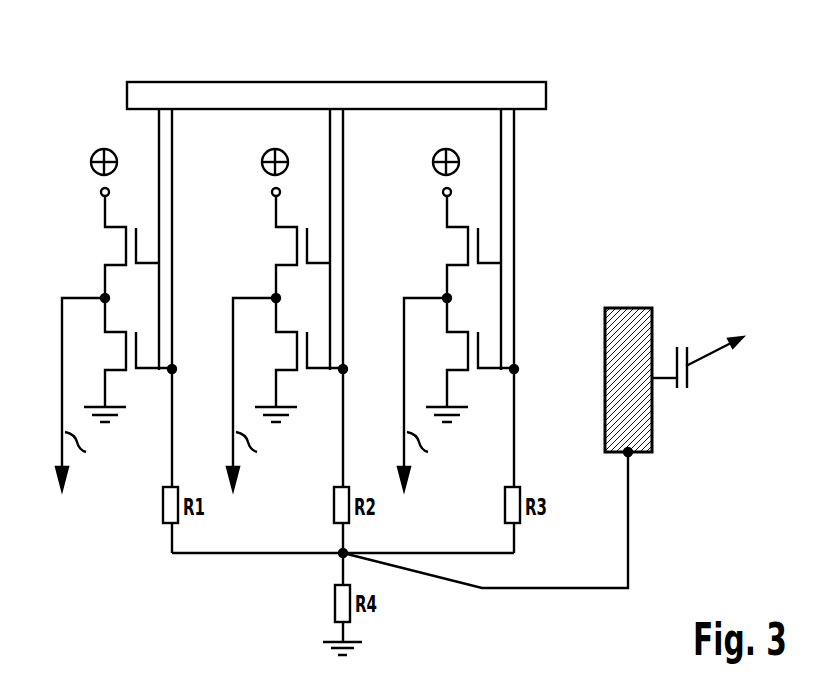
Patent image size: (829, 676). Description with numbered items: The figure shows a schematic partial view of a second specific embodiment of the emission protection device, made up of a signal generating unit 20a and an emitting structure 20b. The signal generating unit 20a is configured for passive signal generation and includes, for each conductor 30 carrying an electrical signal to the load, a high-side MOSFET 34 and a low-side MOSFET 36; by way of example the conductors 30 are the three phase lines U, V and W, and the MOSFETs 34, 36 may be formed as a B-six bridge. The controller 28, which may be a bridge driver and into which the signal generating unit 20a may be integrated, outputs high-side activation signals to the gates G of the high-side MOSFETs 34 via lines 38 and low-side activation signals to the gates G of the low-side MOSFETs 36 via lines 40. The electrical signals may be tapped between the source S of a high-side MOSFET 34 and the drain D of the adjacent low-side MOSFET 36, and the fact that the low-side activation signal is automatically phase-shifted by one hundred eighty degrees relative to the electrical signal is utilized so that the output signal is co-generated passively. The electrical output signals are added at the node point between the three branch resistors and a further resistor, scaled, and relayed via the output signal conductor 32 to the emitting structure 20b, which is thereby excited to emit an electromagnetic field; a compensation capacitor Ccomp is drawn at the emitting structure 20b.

The signal generating unit 20a is at (662, 107).
The emitting structure 20b is at (630, 308).
The controller 28 is at (400, 82).
The conductor 30 is at (60, 412).
The output signal conductor 32 is at (559, 590).
The high-side MOSFET 34 is at (140, 252).
The low-side MOSFET 36 is at (142, 355).
The line 38 is at (159, 130).
The line 40 is at (172, 128).
The compensation capacitor Ccomp is at (688, 388).